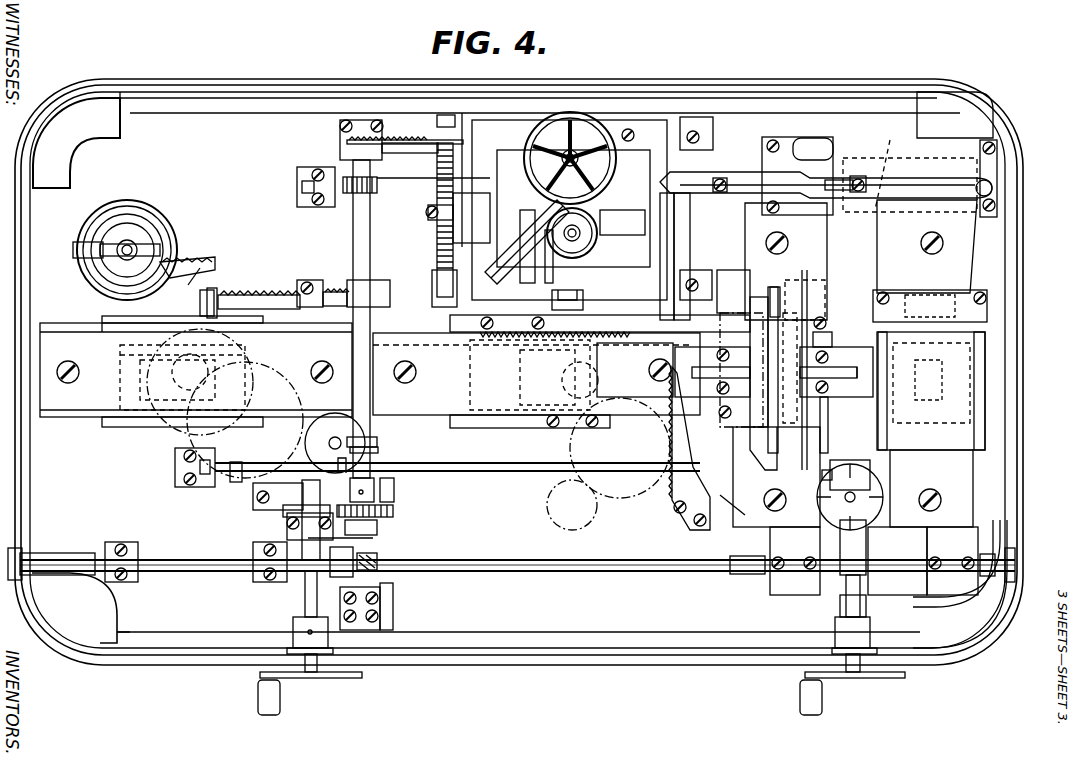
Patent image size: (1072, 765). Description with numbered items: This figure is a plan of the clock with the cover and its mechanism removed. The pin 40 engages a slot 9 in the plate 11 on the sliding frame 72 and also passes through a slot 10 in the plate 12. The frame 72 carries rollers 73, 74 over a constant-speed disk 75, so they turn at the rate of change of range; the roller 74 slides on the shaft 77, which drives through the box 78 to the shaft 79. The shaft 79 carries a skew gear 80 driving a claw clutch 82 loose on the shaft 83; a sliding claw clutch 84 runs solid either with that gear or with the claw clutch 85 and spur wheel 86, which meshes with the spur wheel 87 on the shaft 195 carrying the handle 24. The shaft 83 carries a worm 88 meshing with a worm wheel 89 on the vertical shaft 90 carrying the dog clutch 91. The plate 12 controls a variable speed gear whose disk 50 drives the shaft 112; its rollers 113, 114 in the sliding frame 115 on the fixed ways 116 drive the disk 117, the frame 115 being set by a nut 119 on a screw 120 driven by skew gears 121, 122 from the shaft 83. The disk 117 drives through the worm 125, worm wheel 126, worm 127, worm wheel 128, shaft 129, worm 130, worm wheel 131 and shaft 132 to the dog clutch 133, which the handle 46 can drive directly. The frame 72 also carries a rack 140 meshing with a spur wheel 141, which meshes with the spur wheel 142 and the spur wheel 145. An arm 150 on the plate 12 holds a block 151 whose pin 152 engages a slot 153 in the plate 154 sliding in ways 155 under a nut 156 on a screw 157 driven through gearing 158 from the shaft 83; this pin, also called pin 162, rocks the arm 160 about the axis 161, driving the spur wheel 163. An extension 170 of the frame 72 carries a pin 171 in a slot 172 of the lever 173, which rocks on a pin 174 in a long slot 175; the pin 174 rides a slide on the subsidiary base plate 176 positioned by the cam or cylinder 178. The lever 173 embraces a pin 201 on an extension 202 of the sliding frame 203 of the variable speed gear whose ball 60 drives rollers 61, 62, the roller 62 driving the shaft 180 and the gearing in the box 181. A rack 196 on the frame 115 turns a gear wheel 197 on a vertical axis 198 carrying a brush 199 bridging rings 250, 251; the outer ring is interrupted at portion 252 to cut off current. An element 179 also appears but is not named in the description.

The interrupted portion of outer ring 252 is at (76, 143).
The ring 250 is at (137, 207).
The ring 251 is at (150, 235).
The brush 199 is at (85, 244).
The gear wheel 197 is at (189, 250).
The vertical axis 198 is at (214, 262).
The rack 196 is at (200, 300).
The screw 120 is at (236, 296).
The nut 119 is at (303, 280).
The skew gear 121 is at (346, 290).
The fixed ways 116 is at (195, 371).
The sliding frame 115 is at (100, 322).
The disk 117 is at (163, 371).
The roller 113 is at (140, 372).
The roller 114 is at (150, 396).
The worm 125 is at (165, 430).
The worm wheel 126 is at (245, 420).
The dog clutch 91 is at (330, 418).
The worm 127 is at (187, 477).
The worm wheel 128 is at (238, 490).
The spur wheel 87 is at (283, 515).
The shaft 83 is at (370, 208).
The gearing 158 is at (405, 134).
The skew gear 122 is at (390, 296).
The screw 157 is at (437, 258).
The nut 156 is at (437, 222).
The plate 154 is at (445, 180).
The pin 152 is at (569, 210).
The plate 179 is at (625, 195).
The pin 162 is at (576, 158).
The axis 161 is at (572, 150).
The spur wheel 163 is at (590, 242).
The block 151 is at (578, 242).
The slot 153 is at (623, 226).
The arm 160 is at (522, 249).
The arm 150 is at (545, 297).
The lever 173 is at (826, 185).
The pin 171 is at (724, 180).
The slot 172 is at (694, 182).
The pin 174 is at (857, 195).
The long slot 175 is at (916, 180).
The subsidiary base plate 176 is at (825, 160).
The cam or cylinder 178 is at (889, 163).
The pin 201 is at (975, 195).
The extension 202 is at (927, 246).
The ways 155 is at (696, 256).
The extension 170 is at (697, 271).
The plate 12 is at (760, 278).
The slot 10 is at (776, 292).
The roller 61 is at (930, 304).
The roller 62 is at (930, 304).
The shaft 129 is at (536, 392).
The shaft 112 is at (531, 338).
The disk 50 is at (490, 375).
The ball 60 is at (500, 395).
The spur wheel 145 is at (635, 370).
The rack 140 is at (620, 448).
The spur wheel 142 is at (588, 528).
The spur wheel 141 is at (668, 448).
The worm 88 is at (380, 445).
The vertical shaft 90 is at (377, 441).
The worm wheel 89 is at (376, 474).
The spur wheel 86 is at (396, 505).
The claw clutch 85 is at (376, 507).
The claw clutch 84 is at (377, 528).
The claw clutch 82 is at (377, 556).
The skew gear 80 is at (385, 585).
The shaft 79 is at (565, 571).
The shaft 195 is at (305, 600).
The handle 24 is at (280, 697).
The handle 46 is at (822, 697).
The roller 73 is at (719, 370).
The slot 9 is at (800, 380).
The sliding frame 72 is at (828, 433).
The roller 74 is at (828, 340).
The pin 40 is at (836, 369).
The plate 11 is at (854, 379).
The disk 75 is at (762, 445).
The shaft 77 is at (738, 498).
The sliding frame 203 is at (975, 435).
The shaft 180 is at (931, 485).
The worm wheel 131 is at (850, 497).
The shaft 132 is at (857, 497).
The box 78 is at (795, 561).
The box 181 is at (952, 561).
The dog clutch 133 is at (897, 561).
The worm 130 is at (880, 589).